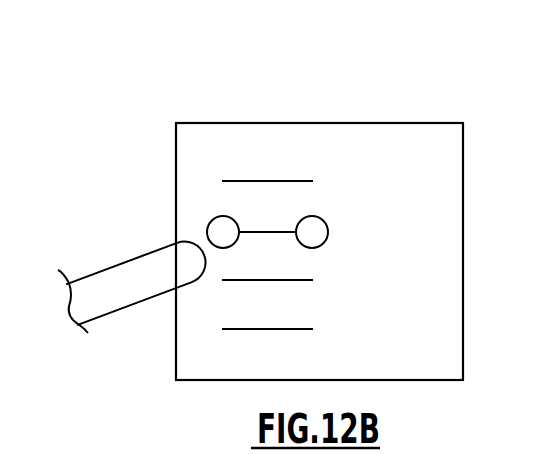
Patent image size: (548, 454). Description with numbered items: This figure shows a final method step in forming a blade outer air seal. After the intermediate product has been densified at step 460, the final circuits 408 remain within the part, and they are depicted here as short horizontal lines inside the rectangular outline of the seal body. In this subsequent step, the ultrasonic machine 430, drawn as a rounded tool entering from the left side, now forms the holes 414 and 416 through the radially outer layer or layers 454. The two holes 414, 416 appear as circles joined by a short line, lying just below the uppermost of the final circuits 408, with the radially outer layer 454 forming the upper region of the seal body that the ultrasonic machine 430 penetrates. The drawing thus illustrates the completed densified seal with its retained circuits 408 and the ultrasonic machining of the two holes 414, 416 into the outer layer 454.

The densifying step 460 is at (358, 84).
The radially outer layer 454 is at (347, 153).
The final circuits 408 is at (275, 180).
The hole 416 is at (213, 217).
The hole 414 is at (323, 216).
The ultrasonic machine 430 is at (110, 280).